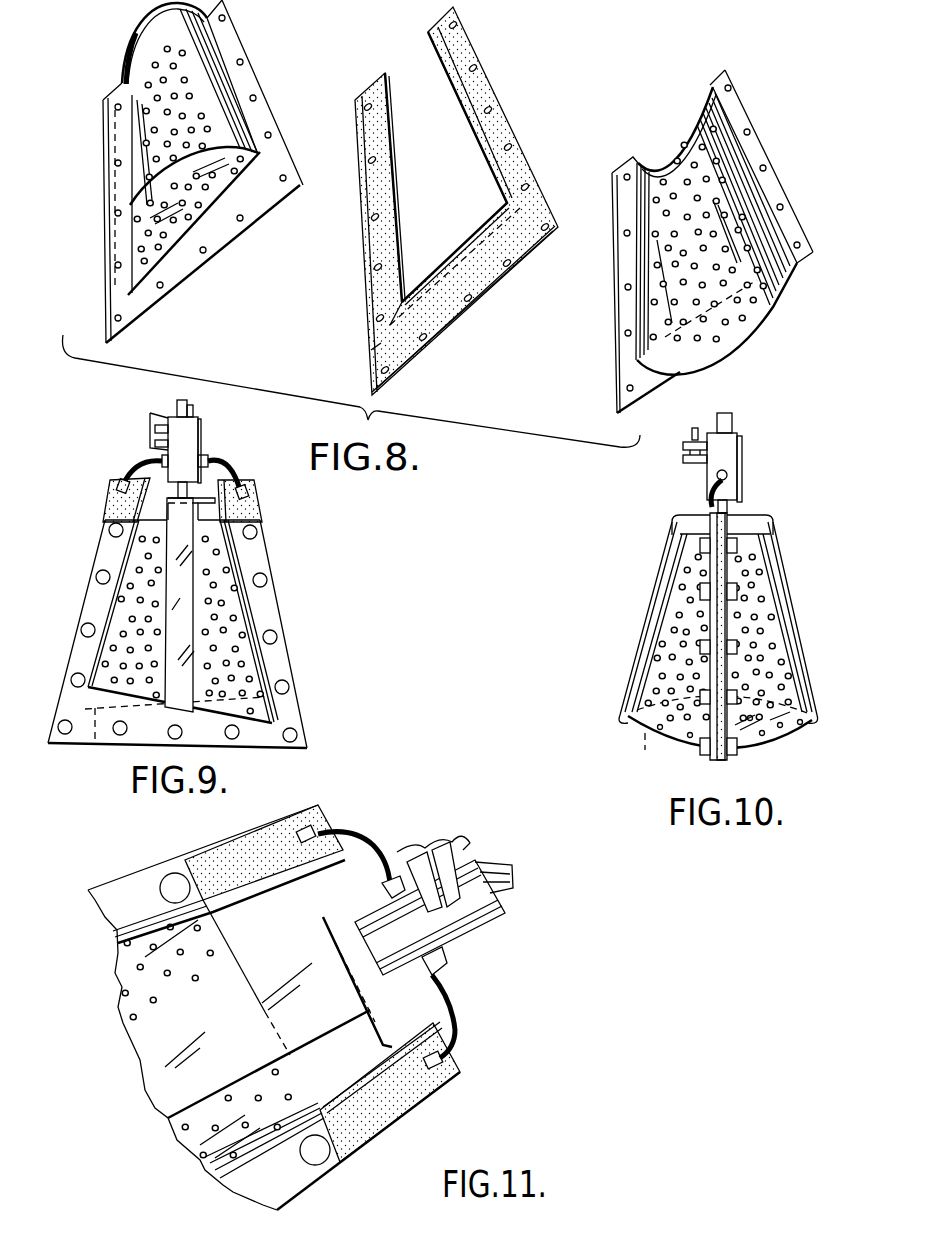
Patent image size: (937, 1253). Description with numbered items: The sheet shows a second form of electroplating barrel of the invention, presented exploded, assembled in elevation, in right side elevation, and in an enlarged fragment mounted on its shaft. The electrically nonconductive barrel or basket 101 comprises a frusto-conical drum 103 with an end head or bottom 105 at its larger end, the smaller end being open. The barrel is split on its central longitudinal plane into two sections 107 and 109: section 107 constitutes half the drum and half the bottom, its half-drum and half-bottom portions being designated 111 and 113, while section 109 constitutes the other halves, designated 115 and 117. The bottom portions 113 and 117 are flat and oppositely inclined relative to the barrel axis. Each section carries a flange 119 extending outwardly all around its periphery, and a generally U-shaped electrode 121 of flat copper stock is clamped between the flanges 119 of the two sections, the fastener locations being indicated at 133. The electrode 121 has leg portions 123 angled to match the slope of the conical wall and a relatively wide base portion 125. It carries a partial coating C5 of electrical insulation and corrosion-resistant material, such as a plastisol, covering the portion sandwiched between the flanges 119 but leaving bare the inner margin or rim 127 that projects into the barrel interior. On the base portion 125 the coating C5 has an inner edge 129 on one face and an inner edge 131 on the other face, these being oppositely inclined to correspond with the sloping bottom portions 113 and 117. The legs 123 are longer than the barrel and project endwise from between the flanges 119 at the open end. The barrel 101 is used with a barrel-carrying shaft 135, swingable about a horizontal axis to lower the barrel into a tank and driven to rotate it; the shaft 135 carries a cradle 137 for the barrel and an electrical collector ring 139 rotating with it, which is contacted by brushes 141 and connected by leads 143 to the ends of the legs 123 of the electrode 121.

In FIG. 10, the barrel 101 is at (694, 610).
In FIG. 10, the frusto-conical drum 103 is at (658, 563).
In FIG. 10, the bottom 105 is at (786, 755).
In FIG. 8, the barrel section 107 is at (151, 155).
In FIG. 8, the barrel section 109 is at (737, 234).
In FIG. 8, the half-drum portion 111 is at (136, 32).
In FIG. 8, the half-bottom portion 113 is at (152, 252).
In FIG. 9, the half-bottom portion 113 is at (107, 693).
In FIG. 10, the half-bottom portion 113 is at (646, 755).
In FIG. 8, the half-drum portion 115 is at (680, 155).
In FIG. 8, the half-bottom portion 117 is at (698, 362).
In FIG. 9, the half-bottom portion 117 is at (93, 750).
In FIG. 10, the half-bottom portion 117 is at (795, 728).
In FIG. 8, the flange 119 is at (255, 67).
In FIG. 9, the flange 119 is at (93, 603).
In FIG. 10, the flange 119 is at (705, 760).
In FIG. 11, the flange 119 is at (303, 1173).
In FIG. 8, the U-shaped electrode 121 is at (432, 201).
In FIG. 9, the U-shaped electrode 121 is at (225, 757).
In FIG. 10, the U-shaped electrode 121 is at (723, 768).
In FIG. 8, the leg portion 123 is at (513, 123).
In FIG. 9, the leg portion 123 is at (107, 500).
In FIG. 11, the leg portion 123 is at (203, 857).
In FIG. 8, the base portion 125 is at (462, 318).
In FIG. 8, the inner margin or rim 127 is at (460, 88).
In FIG. 9, the inner margin or rim 127 is at (143, 478).
In FIG. 11, the inner margin or rim 127 is at (322, 862).
In FIG. 8, the inner edge of coating 129 is at (490, 237).
In FIG. 8, the inner edge of coating 131 is at (437, 287).
In FIG. 9, the fastener locations 133 is at (72, 674).
In FIG. 10, the fastener locations 133 is at (703, 590).
In FIG. 11, the fastener locations 133 is at (172, 878).
In FIG. 9, the barrel-carrying shaft 135 is at (207, 463).
In FIG. 10, the barrel-carrying shaft 135 is at (730, 507).
In FIG. 11, the barrel-carrying shaft 135 is at (372, 963).
In FIG. 9, the cradle 137 is at (175, 535).
In FIG. 10, the cradle 137 is at (647, 623).
In FIG. 11, the cradle 137 is at (135, 1045).
In FIG. 9, the electrical collector ring 139 is at (202, 427).
In FIG. 10, the electrical collector ring 139 is at (742, 440).
In FIG. 11, the electrical collector ring 139 is at (488, 915).
In FIG. 9, the brushes 141 is at (155, 443).
In FIG. 10, the brushes 141 is at (683, 458).
In FIG. 11, the brushes 141 is at (428, 845).
In FIG. 9, the leads 143 is at (128, 468).
In FIG. 10, the leads 143 is at (708, 497).
In FIG. 11, the leads 143 is at (353, 830).
In FIG. 8, the coating C5 is at (372, 347).
In FIG. 11, the coating C5 is at (245, 840).